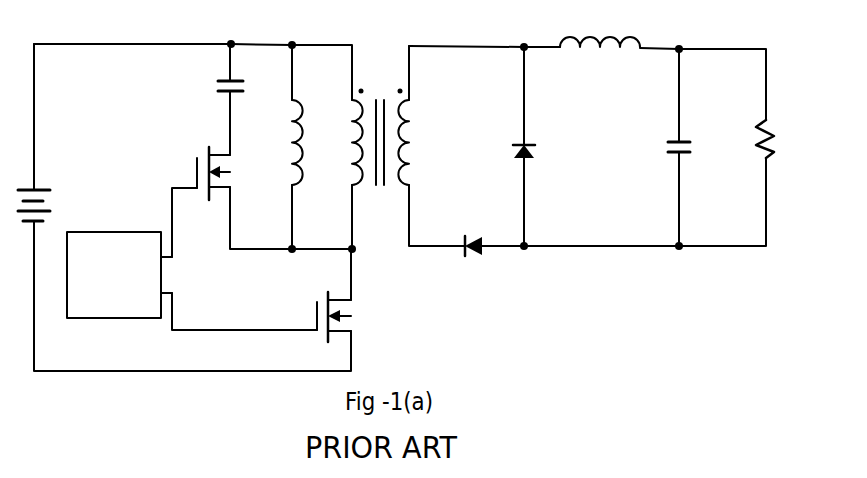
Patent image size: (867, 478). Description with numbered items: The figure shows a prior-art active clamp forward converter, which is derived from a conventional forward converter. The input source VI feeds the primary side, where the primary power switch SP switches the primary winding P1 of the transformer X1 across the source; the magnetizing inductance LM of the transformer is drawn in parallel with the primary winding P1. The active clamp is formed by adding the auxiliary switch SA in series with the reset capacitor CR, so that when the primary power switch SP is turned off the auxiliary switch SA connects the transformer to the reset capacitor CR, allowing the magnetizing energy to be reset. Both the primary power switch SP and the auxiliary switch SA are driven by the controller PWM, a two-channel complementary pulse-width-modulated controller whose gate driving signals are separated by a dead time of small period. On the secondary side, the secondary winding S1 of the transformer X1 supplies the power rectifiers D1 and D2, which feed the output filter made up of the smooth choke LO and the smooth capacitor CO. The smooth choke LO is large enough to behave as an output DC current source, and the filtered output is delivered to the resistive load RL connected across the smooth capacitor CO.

The input source VI is at (47, 205).
The reset capacitor CR is at (215, 89).
The auxiliary switch SA is at (229, 173).
The controller PWM is at (114, 275).
The primary power switch SP is at (351, 317).
The magnetizing inductance LM is at (282, 142).
The transformer primary winding P1 is at (344, 142).
The transformer X1 is at (381, 122).
The transformer secondary winding S1 is at (417, 115).
The power rectifier D1 is at (476, 262).
The power rectifier D2 is at (545, 158).
The smooth choke LO is at (600, 27).
The smooth capacitor CO is at (662, 149).
The resistive load RL is at (749, 142).